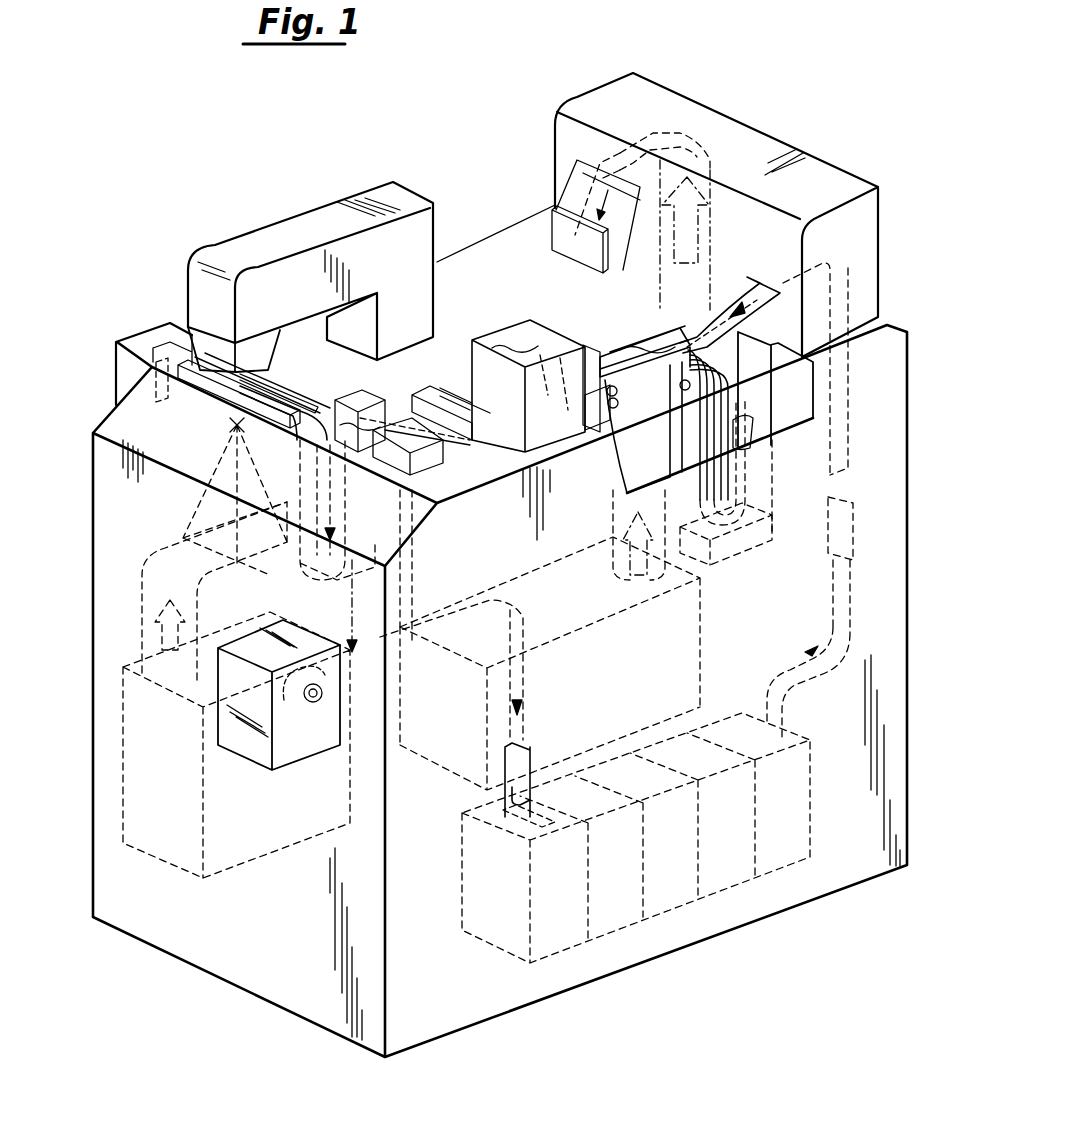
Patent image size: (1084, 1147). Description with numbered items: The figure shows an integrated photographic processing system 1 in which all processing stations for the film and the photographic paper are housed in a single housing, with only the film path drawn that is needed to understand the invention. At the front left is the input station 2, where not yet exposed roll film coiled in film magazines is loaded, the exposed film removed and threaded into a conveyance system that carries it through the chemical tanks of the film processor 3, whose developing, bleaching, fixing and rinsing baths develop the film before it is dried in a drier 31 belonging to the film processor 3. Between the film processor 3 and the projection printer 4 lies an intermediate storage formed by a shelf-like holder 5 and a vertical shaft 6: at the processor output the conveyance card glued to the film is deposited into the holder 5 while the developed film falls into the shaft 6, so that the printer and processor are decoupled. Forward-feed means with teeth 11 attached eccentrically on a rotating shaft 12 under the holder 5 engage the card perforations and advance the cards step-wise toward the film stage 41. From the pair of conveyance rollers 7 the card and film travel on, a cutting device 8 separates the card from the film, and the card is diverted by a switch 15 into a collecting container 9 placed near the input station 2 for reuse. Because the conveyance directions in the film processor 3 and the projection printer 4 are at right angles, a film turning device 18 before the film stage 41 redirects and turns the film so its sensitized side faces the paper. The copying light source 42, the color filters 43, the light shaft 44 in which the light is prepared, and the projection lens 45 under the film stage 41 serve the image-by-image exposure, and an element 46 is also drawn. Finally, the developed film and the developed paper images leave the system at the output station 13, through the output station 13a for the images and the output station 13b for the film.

The integrated photographic processing system 1 is at (195, 193).
The input station 2 is at (255, 765).
The film processor 3 is at (607, 925).
The projection printer 4 is at (300, 215).
The shelf-like holder 5 is at (627, 351).
The vertical shaft 6 is at (757, 387).
The pair of conveyance rollers 7 is at (618, 400).
The cutting device 8 is at (597, 418).
The collecting container 9 is at (427, 390).
The teeth 11 is at (688, 457).
The rotating shaft 12 is at (683, 391).
The output station 13 is at (468, 274).
The output station for the images 13a is at (570, 247).
The output station for the film 13b is at (124, 368).
The switch 15 is at (515, 340).
The film turning device 18 is at (430, 465).
The drier 31 is at (858, 427).
The film stage 41 is at (212, 397).
The copying light source 42 is at (183, 298).
The color filters 43 is at (183, 298).
The light shaft 44 is at (197, 300).
The projection lens 45 is at (230, 432).
The block 46 is at (360, 420).